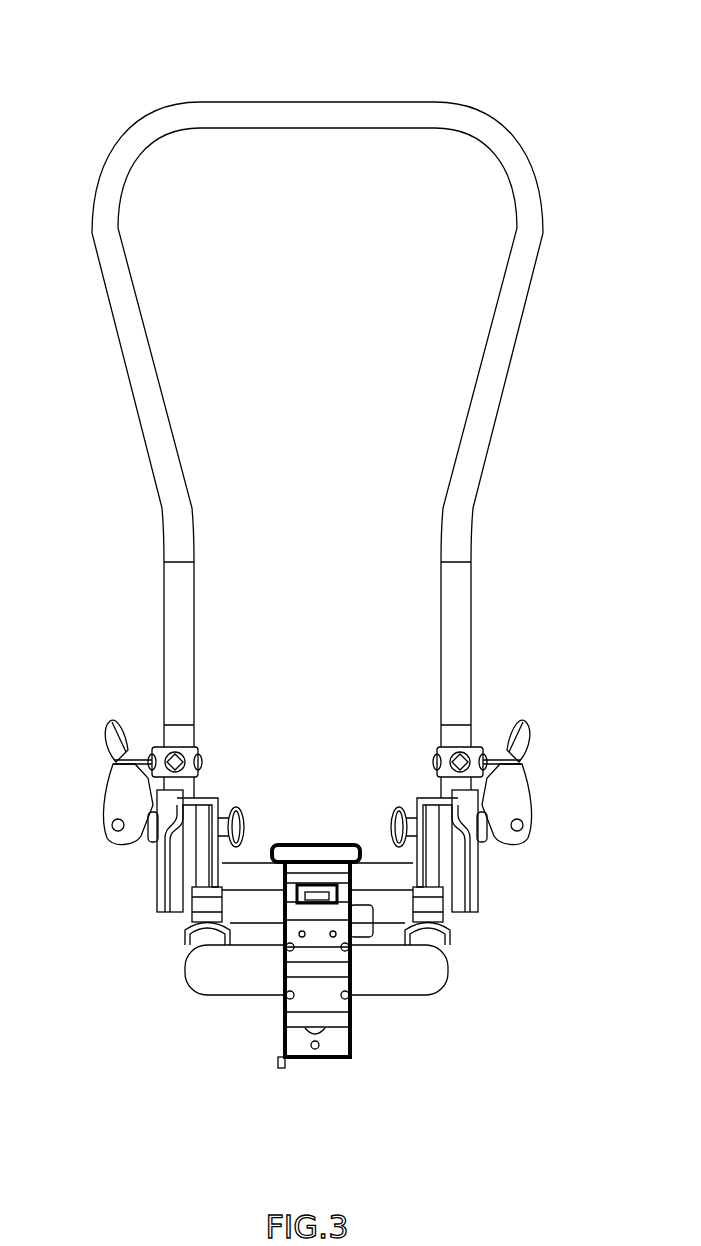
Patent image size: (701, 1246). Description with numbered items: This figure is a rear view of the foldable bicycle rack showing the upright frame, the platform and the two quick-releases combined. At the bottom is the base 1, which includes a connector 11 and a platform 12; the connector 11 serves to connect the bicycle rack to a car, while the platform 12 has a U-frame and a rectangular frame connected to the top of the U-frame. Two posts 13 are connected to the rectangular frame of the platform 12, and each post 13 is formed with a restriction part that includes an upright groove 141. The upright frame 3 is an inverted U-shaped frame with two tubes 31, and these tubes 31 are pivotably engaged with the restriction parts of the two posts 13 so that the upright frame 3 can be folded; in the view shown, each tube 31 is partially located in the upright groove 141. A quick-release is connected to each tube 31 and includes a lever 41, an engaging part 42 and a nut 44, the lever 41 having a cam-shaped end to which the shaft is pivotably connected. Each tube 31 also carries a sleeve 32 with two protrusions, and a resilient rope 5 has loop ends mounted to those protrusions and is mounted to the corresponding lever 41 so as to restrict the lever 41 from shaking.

The base 1 is at (251, 1013).
The upright frame 3 is at (316, 101).
The resilient rope 5 is at (114, 762).
The connector 11 is at (316, 1058).
The platform 12 is at (407, 996).
The post 13 is at (183, 903).
The tube 31 is at (163, 640).
The sleeve 32 is at (197, 748).
The lever 41 is at (112, 826).
The engaging part 42 is at (150, 843).
The nut 44 is at (237, 806).
The upright groove 141 is at (168, 912).